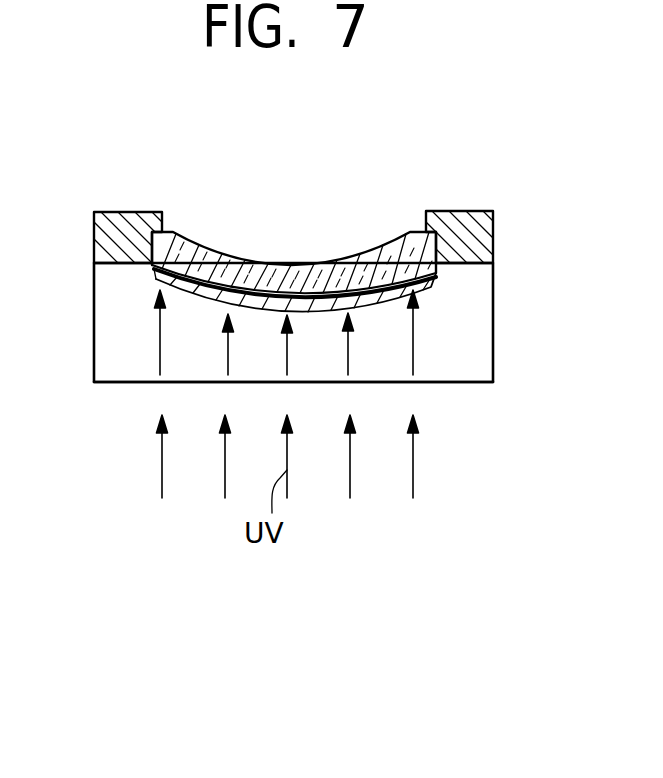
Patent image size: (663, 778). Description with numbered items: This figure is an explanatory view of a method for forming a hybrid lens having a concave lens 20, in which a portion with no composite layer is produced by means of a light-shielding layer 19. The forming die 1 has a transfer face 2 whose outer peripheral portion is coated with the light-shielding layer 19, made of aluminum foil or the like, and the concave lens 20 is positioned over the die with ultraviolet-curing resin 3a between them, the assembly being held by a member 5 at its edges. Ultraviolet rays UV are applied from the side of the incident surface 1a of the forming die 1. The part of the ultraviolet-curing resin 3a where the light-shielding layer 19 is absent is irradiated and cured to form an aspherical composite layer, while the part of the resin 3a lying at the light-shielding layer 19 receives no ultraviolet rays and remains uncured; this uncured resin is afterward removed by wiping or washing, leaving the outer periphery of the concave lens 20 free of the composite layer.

The forming die 1 is at (121, 323).
The incident surface 1a is at (385, 382).
The transfer face 2 is at (393, 292).
The ultraviolet-curing resin 3a is at (326, 297).
The holding member 5 is at (480, 228).
The light-shielding layer 19 is at (438, 279).
The concave lens 20 is at (253, 270).